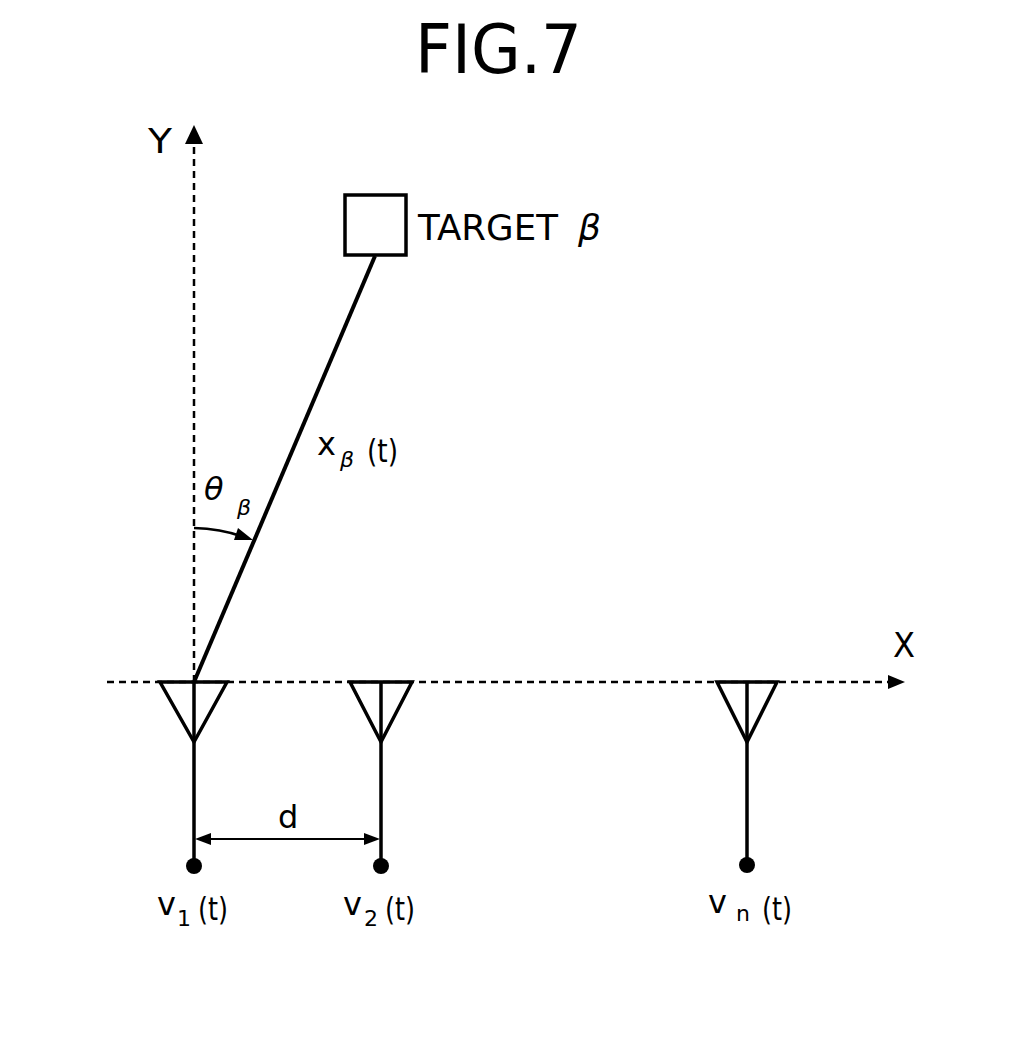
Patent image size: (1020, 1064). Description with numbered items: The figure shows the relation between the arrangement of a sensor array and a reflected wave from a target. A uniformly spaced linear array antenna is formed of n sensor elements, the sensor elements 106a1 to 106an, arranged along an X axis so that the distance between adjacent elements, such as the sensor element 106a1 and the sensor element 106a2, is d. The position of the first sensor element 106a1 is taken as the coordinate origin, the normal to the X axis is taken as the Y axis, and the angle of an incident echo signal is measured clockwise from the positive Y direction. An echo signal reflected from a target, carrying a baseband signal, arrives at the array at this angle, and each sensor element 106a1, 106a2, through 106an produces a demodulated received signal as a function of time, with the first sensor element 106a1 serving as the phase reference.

The sensor element 106a1 is at (194, 774).
The sensor element 106a2 is at (381, 774).
The sensor element 106an is at (747, 770).